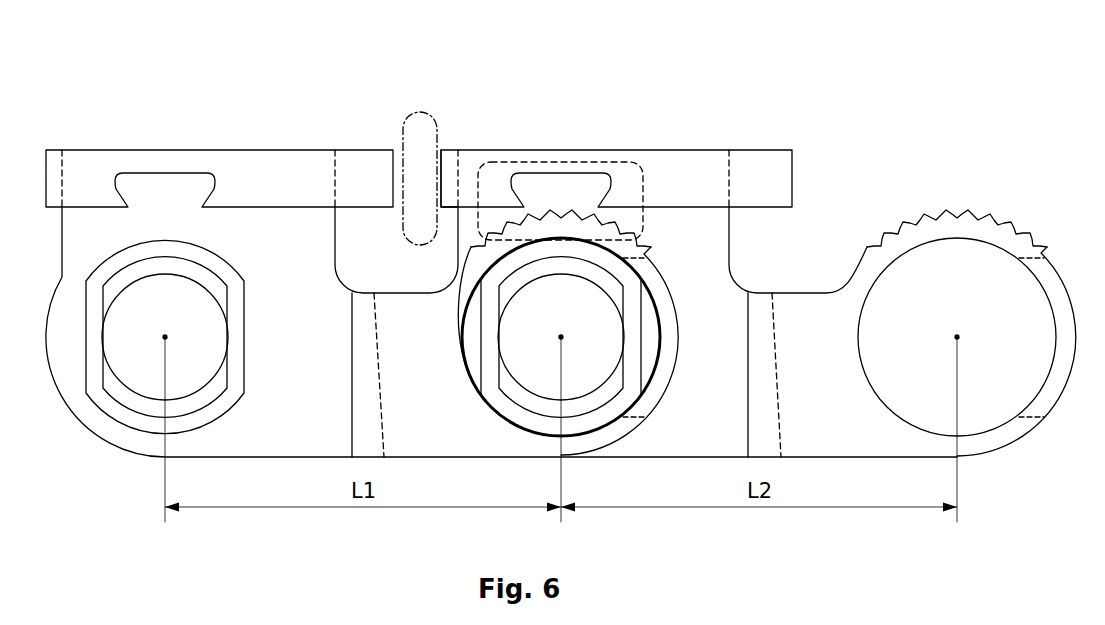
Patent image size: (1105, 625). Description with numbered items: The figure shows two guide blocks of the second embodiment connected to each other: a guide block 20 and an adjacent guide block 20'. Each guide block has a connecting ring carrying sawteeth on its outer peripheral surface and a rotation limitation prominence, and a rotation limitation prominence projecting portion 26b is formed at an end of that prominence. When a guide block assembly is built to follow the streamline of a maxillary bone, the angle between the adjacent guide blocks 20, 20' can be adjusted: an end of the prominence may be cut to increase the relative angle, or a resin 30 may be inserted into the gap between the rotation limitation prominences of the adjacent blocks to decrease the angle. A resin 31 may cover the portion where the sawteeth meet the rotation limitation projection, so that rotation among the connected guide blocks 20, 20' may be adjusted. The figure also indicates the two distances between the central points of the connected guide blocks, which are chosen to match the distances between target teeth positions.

The guide block 20 is at (501, 242).
The guide block 20' is at (758, 242).
The resin 30 is at (406, 116).
The rotation limitation prominence projecting portion 26b is at (441, 150).
The resin 31 is at (593, 161).